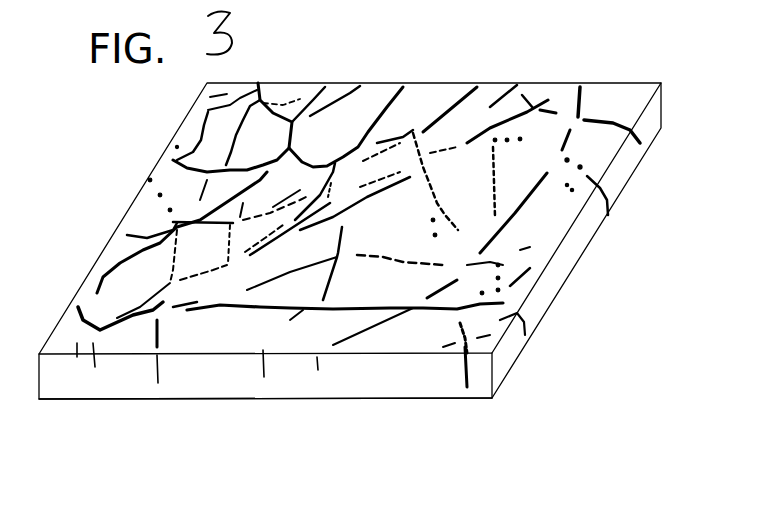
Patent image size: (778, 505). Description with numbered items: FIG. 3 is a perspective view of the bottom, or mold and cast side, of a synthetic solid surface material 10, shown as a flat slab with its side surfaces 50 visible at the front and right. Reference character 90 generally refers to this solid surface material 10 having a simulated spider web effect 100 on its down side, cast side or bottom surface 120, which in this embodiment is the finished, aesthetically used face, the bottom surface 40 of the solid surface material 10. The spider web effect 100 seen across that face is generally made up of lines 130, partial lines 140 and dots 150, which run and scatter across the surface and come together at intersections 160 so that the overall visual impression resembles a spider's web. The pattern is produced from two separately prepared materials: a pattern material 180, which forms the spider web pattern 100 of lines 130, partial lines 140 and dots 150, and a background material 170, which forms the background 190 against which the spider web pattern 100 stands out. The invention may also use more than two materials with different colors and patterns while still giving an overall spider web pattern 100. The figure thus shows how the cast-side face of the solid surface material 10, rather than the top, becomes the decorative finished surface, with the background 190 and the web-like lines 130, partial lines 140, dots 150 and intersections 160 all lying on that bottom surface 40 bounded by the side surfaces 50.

The synthetic solid surface material 10 is at (638, 290).
The bottom surface 40 is at (200, 337).
The side surfaces 50 is at (62, 382).
The solid surface material having a spider web effect 90 is at (425, 333).
The spider web effect 100 is at (485, 310).
The bottom surface 120 is at (522, 277).
The lines 130 is at (386, 85).
The partial lines 140 is at (408, 112).
The dots 150 is at (541, 139).
The intersections 160 is at (548, 135).
The background material 170 is at (601, 147).
The pattern material 180 is at (603, 178).
The background 190 is at (552, 210).